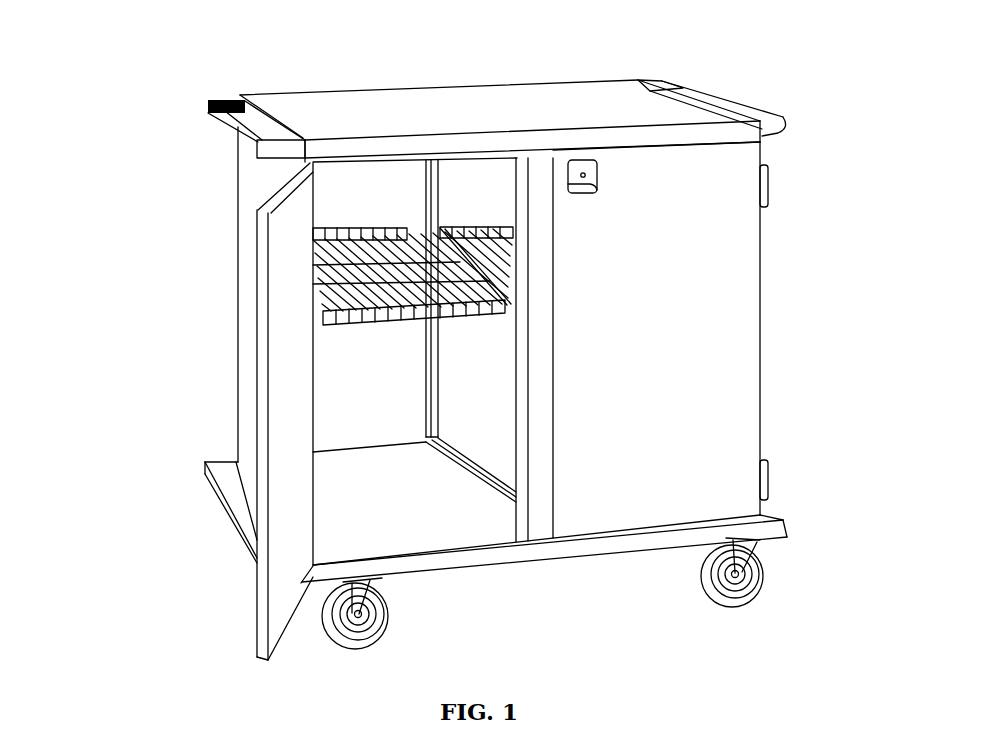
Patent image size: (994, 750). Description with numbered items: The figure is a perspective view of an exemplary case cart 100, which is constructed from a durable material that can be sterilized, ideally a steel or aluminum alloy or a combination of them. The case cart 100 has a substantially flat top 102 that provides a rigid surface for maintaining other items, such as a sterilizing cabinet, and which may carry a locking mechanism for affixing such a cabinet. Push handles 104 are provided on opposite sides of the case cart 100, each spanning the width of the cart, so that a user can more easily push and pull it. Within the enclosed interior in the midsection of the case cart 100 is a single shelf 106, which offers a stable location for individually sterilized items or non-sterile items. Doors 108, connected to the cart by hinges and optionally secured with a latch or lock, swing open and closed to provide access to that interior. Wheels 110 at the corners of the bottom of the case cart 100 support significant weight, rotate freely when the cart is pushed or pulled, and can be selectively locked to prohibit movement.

The case cart 100 is at (131, 107).
The flat top 102 is at (586, 96).
The push handles 104 is at (236, 90).
The shelf 106 is at (328, 270).
The doors 108 is at (280, 503).
The wheels 110 is at (397, 612).